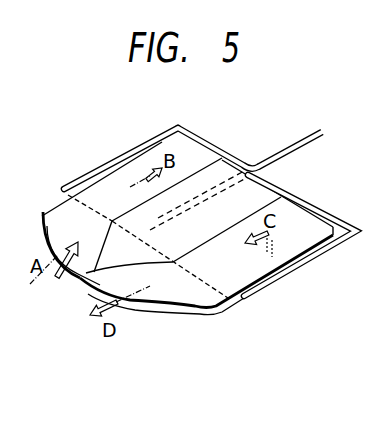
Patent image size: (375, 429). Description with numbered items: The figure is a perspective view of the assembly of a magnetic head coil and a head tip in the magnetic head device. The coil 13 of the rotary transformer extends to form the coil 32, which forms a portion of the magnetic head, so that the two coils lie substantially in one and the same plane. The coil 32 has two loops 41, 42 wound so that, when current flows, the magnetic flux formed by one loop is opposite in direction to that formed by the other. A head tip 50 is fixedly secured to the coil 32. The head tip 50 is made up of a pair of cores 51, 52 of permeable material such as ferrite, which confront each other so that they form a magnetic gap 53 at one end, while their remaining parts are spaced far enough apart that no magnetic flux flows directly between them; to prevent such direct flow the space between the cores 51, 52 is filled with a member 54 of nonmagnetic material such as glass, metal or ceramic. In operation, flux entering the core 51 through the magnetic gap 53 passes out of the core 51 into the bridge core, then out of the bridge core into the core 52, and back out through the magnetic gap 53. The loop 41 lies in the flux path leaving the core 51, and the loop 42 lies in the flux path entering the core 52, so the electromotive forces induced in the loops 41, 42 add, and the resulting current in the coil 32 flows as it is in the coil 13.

The coil 13 is at (297, 145).
The coil 32 is at (294, 271).
The loop 41 is at (118, 186).
The loop 42 is at (305, 228).
The head tip 50 is at (170, 339).
The core 51 is at (56, 210).
The core 52 is at (203, 300).
The magnetic gap 53 is at (78, 283).
The member of nonmagnetic material 54 is at (222, 168).